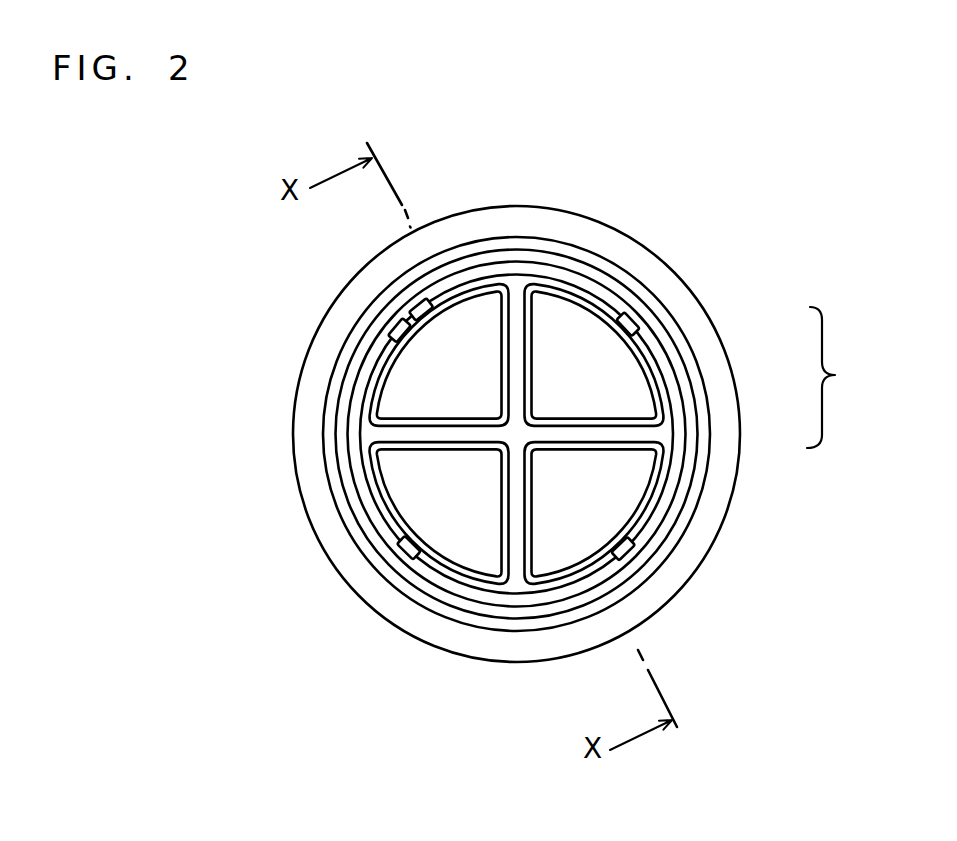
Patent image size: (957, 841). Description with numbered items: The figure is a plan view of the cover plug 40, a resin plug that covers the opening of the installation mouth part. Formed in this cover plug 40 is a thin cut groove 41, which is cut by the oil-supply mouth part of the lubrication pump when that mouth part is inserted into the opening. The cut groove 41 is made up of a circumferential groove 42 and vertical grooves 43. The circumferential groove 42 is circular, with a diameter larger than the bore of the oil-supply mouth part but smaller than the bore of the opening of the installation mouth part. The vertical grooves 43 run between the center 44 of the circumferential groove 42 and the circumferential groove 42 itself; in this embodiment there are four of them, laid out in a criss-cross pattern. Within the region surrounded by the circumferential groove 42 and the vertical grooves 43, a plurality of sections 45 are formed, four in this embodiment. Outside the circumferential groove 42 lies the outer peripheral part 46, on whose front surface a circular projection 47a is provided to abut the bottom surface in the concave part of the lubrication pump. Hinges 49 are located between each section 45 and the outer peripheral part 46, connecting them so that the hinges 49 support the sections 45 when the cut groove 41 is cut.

The cover plug 40 is at (545, 228).
The cut groove 41 is at (845, 377).
The circumferential groove 42 is at (650, 350).
The vertical grooves 43 is at (665, 437).
The center 44 is at (515, 436).
The sections 45 is at (412, 372).
The outer peripheral part 46 is at (363, 278).
The circular projection 47a is at (625, 597).
The hinges 49 is at (402, 542).